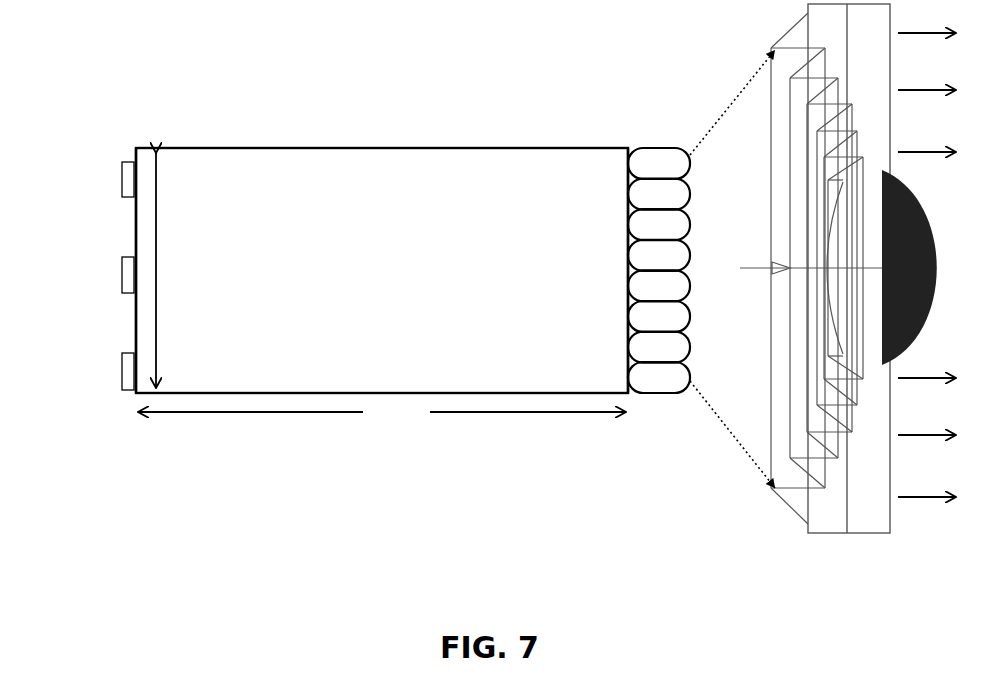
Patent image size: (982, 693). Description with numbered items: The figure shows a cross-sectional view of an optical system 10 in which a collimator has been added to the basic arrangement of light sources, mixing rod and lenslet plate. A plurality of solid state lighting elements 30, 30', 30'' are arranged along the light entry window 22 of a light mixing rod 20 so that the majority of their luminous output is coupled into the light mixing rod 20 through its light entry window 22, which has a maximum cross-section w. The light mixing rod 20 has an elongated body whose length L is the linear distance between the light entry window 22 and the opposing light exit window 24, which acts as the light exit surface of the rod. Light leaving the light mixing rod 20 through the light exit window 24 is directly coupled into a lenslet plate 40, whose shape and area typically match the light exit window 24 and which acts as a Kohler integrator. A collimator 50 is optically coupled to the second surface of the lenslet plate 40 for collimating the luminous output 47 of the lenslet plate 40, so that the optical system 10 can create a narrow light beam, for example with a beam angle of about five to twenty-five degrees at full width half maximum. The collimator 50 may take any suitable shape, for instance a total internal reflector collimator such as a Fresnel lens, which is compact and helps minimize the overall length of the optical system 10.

The optical system 10 is at (506, 604).
The light mixing rod 20 is at (360, 162).
The light entry window 22 is at (136, 226).
The light exit window 24 is at (628, 240).
The solid state lighting element 30 is at (90, 179).
The solid state lighting element 30' is at (89, 272).
The solid state lighting element 30'' is at (89, 370).
The lenslet plate 40 is at (656, 156).
The luminous output 47 is at (730, 130).
The collimator 50 is at (868, 528).